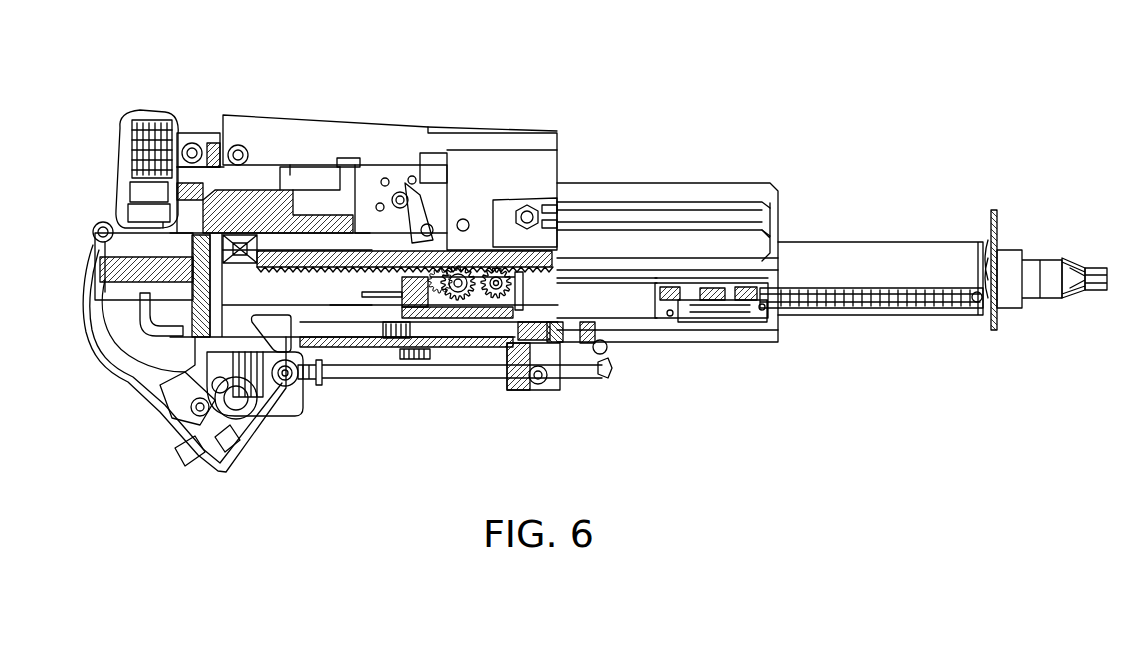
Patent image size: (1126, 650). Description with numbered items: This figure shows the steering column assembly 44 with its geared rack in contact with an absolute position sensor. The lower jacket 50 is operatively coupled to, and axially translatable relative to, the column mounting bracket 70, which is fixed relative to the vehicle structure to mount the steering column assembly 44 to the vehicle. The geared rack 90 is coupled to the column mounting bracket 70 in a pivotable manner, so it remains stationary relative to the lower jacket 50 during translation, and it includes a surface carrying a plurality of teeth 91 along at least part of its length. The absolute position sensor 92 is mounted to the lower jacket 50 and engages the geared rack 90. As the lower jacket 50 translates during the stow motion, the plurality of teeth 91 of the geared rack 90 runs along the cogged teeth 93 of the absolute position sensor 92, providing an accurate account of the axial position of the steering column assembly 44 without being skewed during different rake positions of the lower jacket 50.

The steering column assembly 44 is at (788, 95).
The lower jacket 50 is at (712, 241).
The column mounting bracket 70 is at (290, 121).
The geared rack 90 is at (252, 240).
The plurality of teeth 91 is at (381, 268).
The absolute position sensor 92 is at (500, 306).
The cogged teeth 93 is at (461, 298).